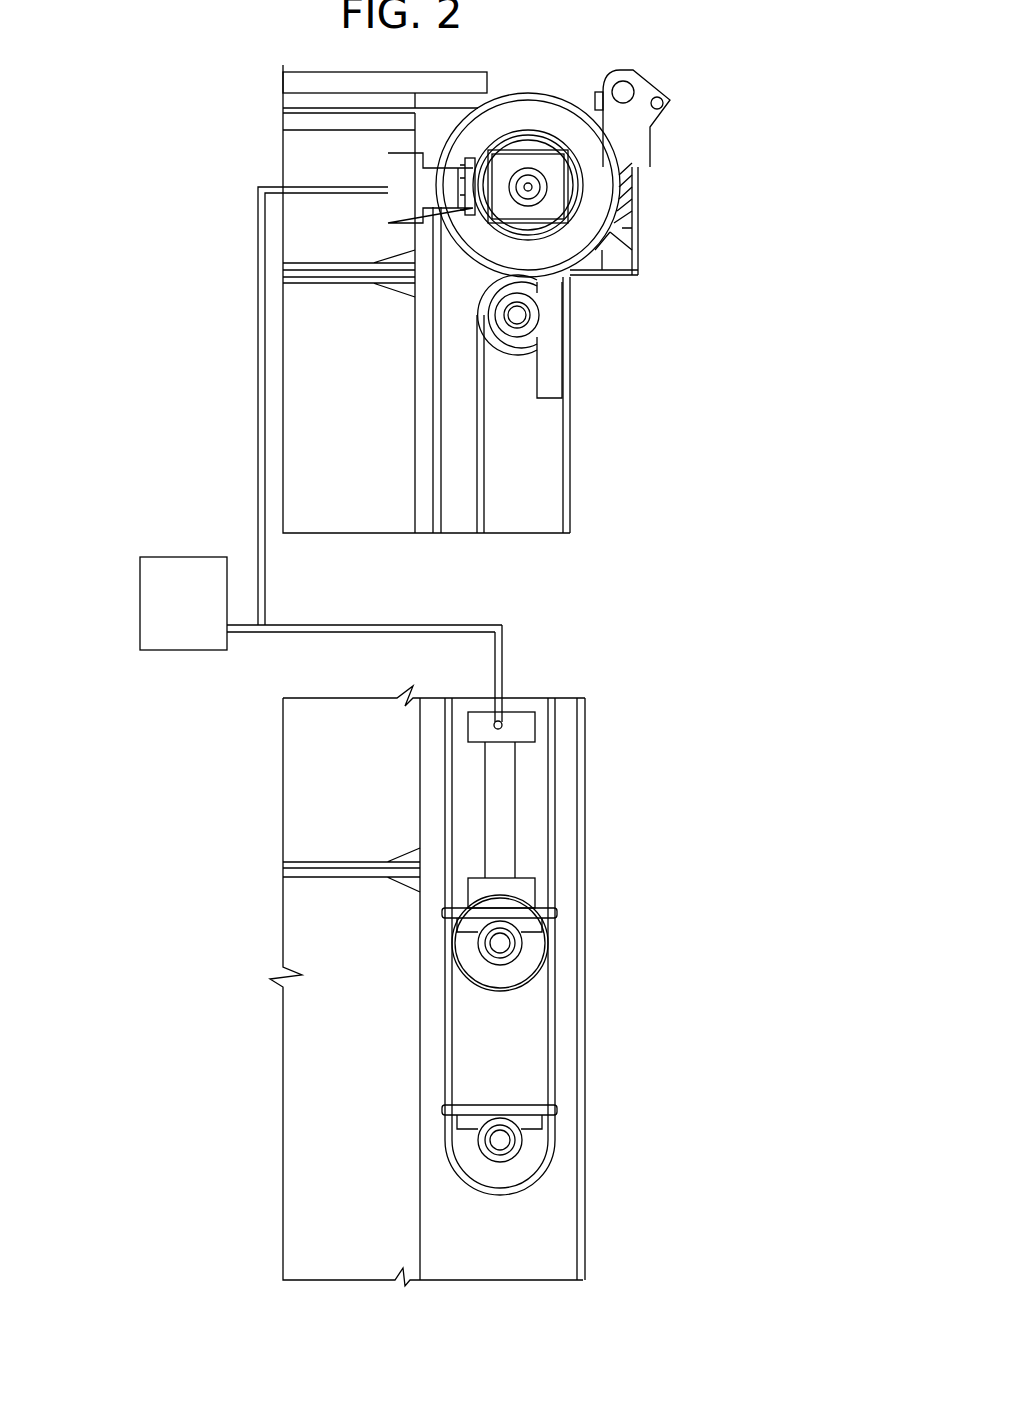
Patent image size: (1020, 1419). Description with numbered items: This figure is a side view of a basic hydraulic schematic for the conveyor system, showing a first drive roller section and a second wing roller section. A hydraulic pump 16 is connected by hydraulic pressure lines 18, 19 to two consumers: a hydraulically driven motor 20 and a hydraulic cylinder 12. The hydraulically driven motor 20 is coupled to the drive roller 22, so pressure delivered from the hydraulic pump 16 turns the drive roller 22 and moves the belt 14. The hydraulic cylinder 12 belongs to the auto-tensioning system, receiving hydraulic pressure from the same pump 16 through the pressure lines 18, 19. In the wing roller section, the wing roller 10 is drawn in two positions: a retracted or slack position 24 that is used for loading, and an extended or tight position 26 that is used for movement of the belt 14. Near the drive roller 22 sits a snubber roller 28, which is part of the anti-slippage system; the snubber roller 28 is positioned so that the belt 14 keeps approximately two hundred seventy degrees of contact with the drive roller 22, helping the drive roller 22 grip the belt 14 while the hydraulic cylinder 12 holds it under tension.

The wing roller 10 is at (599, 1045).
The hydraulic cylinder 12 is at (502, 785).
The belt 14 is at (497, 475).
The hydraulic pump 16 is at (180, 595).
The hydraulic pressure line 18 is at (258, 265).
The hydraulic pressure line 19 is at (502, 658).
The hydraulically driven motor 20 is at (398, 172).
The drive roller 22 is at (590, 212).
The retracted position 24 is at (530, 935).
The extended position 26 is at (528, 1160).
The snubber roller 28 is at (520, 315).